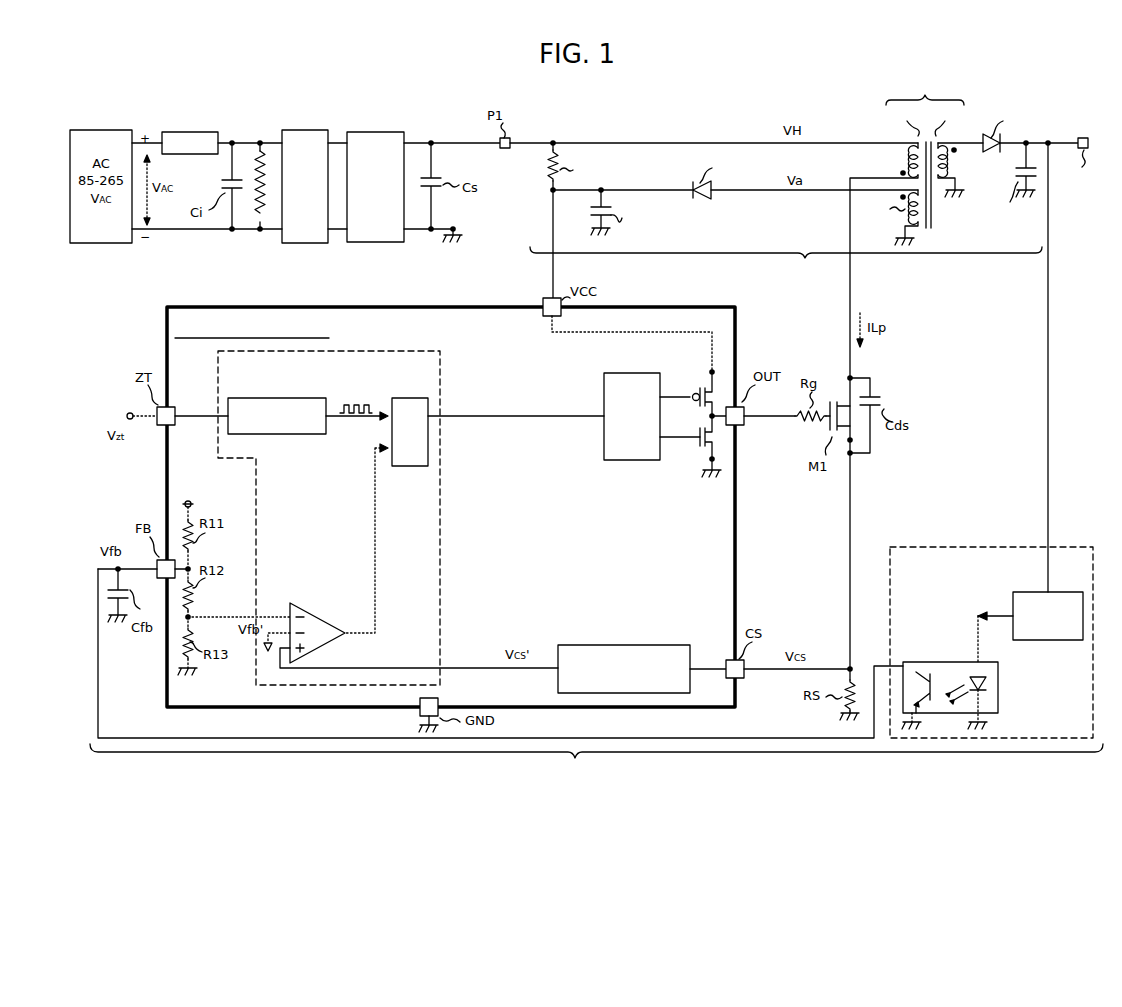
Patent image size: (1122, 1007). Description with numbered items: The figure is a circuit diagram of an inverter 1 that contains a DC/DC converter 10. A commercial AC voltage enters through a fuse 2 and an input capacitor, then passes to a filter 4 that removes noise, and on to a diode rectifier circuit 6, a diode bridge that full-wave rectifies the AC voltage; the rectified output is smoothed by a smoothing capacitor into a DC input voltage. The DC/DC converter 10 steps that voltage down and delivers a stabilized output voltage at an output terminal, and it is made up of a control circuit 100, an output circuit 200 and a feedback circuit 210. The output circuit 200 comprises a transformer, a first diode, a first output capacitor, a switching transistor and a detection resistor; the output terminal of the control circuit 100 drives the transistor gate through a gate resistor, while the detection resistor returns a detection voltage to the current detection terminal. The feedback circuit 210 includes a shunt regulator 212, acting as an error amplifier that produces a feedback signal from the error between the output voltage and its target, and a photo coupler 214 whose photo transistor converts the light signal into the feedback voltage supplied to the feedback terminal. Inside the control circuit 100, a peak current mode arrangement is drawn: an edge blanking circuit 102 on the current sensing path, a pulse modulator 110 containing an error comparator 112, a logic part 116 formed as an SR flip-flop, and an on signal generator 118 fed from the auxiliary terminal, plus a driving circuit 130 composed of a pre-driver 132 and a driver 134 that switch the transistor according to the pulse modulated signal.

The inverter 1 is at (523, 801).
The fuse 2 is at (198, 132).
The filter 4 is at (304, 131).
The diode rectifier circuit 6 is at (376, 132).
The DC/DC converter 10 is at (596, 762).
The control circuit 100 is at (323, 306).
The edge blanking circuit 102 is at (643, 642).
The pulse modulator 110 is at (432, 354).
The error comparator 112 is at (310, 606).
The logic part 116 is at (403, 397).
The on signal generator 118 is at (274, 397).
The driving circuit 130 is at (666, 459).
The pre-driver 132 is at (632, 460).
The driver 134 is at (709, 466).
The output circuit 200 is at (813, 333).
The feedback circuit 210 is at (971, 545).
The shunt regulator 212 is at (1059, 592).
The photo coupler 214 is at (924, 661).